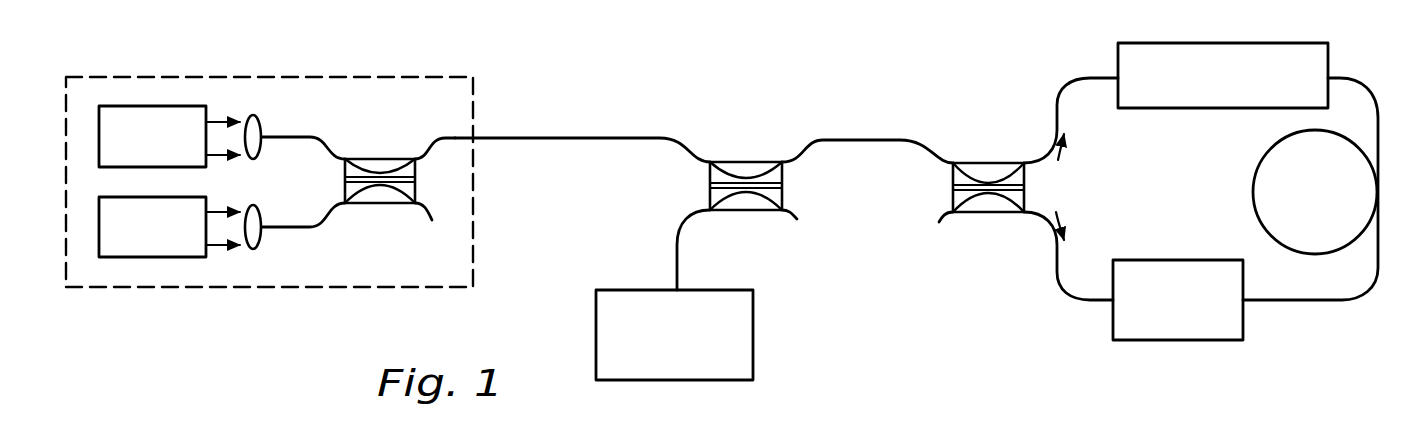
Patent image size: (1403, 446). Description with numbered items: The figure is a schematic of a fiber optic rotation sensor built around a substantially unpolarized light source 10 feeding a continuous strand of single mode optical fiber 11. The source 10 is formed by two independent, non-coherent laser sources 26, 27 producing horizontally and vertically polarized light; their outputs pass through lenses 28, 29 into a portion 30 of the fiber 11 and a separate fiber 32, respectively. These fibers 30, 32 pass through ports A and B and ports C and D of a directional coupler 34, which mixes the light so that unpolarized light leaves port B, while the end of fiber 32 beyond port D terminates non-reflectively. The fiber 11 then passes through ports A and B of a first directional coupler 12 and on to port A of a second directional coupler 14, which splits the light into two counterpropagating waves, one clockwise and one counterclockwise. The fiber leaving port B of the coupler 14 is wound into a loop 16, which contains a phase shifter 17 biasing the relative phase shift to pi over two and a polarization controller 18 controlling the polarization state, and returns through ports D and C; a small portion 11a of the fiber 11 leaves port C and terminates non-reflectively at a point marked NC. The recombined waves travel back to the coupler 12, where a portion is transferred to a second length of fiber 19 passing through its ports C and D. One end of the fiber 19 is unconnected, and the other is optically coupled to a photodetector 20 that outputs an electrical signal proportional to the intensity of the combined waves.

The unpolarized light source 10 is at (360, 75).
The single mode optical fiber 11 is at (594, 137).
The small portion of the fiber 11a is at (943, 216).
The first directional coupler 12 is at (753, 161).
The second directional coupler 14 is at (1004, 163).
The loop 16 is at (1256, 220).
The phase shifter 17 is at (1208, 327).
The polarization controller 18 is at (1264, 43).
The second length of fiber 19 is at (675, 228).
The photodetector 20 is at (712, 290).
The laser source 26 is at (146, 110).
The laser source 27 is at (145, 247).
The lens 28 is at (264, 129).
The lens 29 is at (261, 212).
The portion of the fiber 30 is at (313, 137).
The separate fiber 32 is at (297, 228).
The directional coupler 34 is at (370, 204).